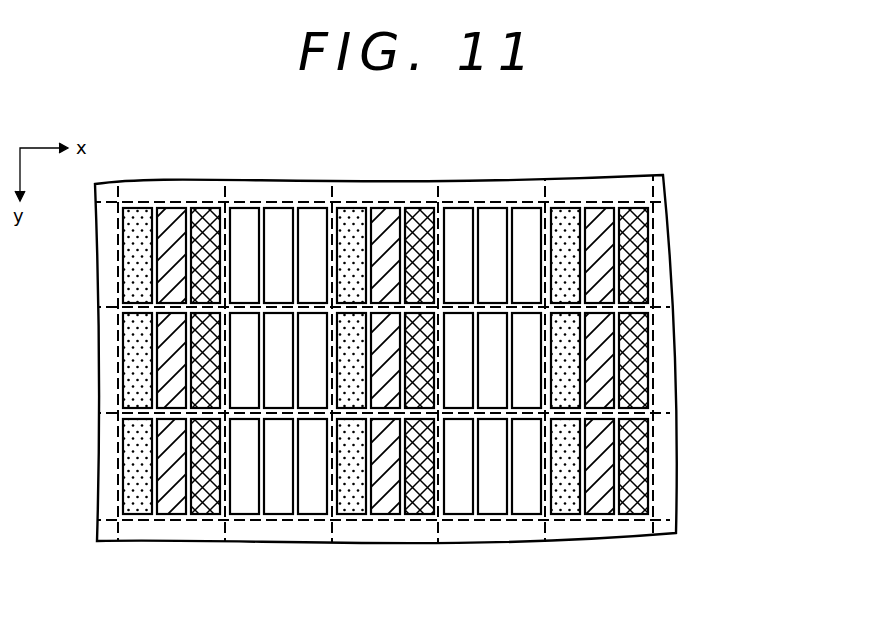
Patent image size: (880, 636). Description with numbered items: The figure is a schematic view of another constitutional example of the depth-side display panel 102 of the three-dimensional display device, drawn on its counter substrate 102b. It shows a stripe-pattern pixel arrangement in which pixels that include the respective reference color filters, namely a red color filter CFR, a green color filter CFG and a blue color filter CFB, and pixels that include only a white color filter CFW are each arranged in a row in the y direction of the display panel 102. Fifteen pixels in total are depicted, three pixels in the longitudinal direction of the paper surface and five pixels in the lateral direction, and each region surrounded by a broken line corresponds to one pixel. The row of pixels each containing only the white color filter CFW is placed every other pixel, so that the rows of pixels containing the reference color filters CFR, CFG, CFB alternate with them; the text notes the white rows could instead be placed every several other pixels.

The counter substrate 102b is at (662, 238).
The display panel 102 is at (442, 360).
The red color filter CFR is at (142, 505).
The green color filter CFG is at (178, 505).
The blue color filter CFB is at (207, 507).
The white color filter CFW is at (243, 222).